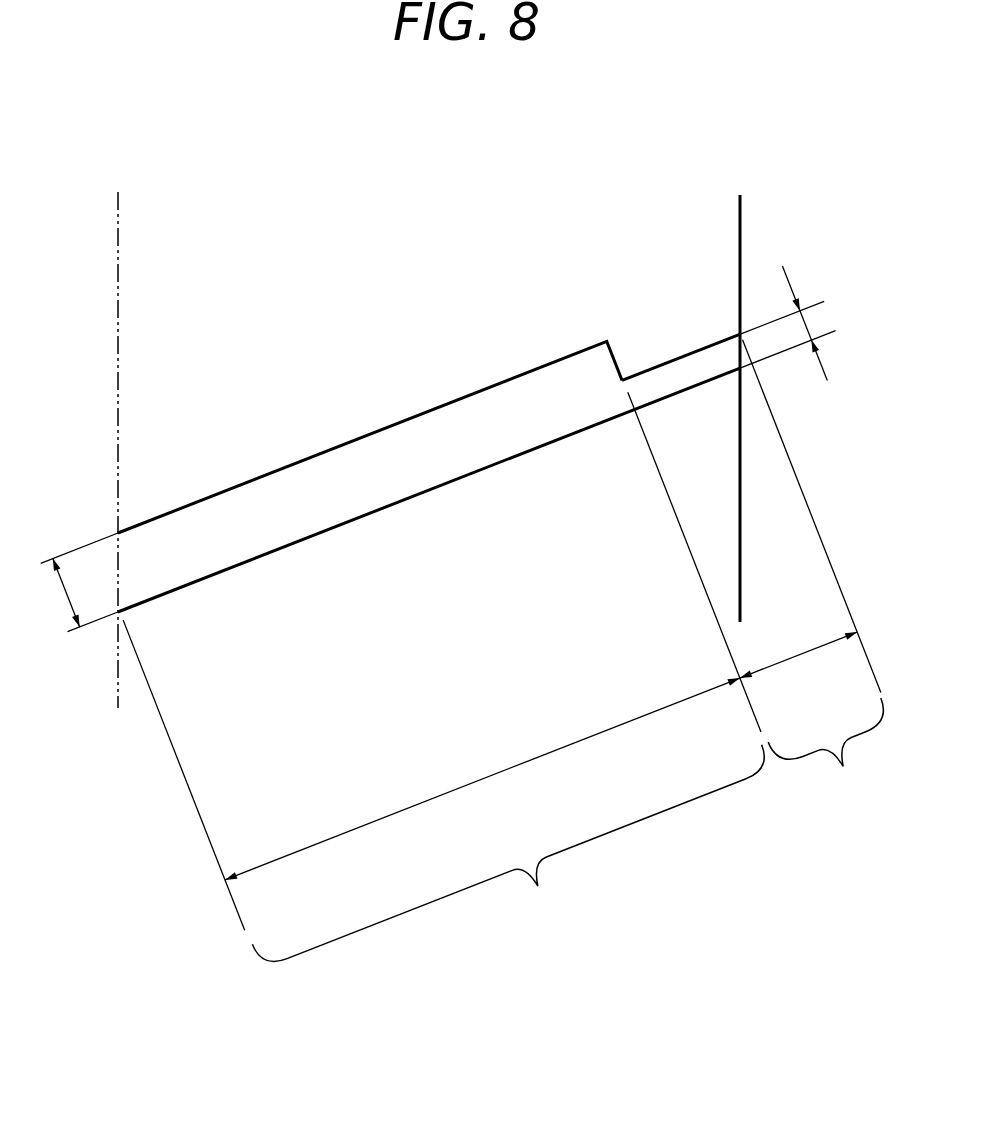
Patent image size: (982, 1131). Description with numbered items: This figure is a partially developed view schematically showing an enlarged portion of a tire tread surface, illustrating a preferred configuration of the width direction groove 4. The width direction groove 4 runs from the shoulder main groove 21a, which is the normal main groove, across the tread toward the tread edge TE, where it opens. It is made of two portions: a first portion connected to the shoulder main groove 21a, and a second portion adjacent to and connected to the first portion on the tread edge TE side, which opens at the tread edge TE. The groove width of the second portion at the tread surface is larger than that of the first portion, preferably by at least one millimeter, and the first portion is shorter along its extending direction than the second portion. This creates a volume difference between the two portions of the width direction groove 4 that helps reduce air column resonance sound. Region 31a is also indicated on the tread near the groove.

The width direction groove 4 is at (364, 400).
The shoulder main groove 21a is at (785, 223).
The surface of second member 31a is at (438, 233).
The tread edge TE is at (117, 439).